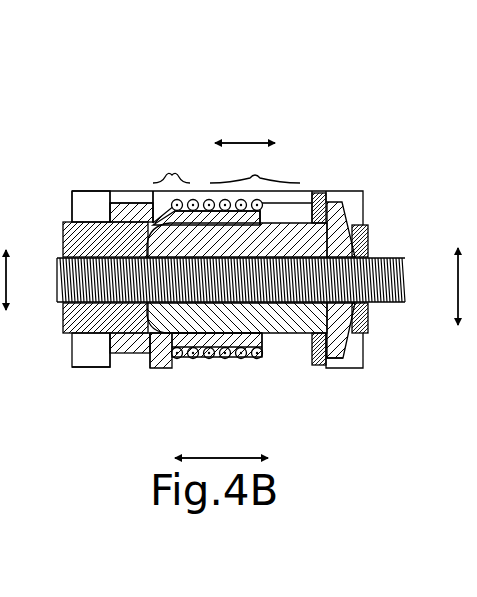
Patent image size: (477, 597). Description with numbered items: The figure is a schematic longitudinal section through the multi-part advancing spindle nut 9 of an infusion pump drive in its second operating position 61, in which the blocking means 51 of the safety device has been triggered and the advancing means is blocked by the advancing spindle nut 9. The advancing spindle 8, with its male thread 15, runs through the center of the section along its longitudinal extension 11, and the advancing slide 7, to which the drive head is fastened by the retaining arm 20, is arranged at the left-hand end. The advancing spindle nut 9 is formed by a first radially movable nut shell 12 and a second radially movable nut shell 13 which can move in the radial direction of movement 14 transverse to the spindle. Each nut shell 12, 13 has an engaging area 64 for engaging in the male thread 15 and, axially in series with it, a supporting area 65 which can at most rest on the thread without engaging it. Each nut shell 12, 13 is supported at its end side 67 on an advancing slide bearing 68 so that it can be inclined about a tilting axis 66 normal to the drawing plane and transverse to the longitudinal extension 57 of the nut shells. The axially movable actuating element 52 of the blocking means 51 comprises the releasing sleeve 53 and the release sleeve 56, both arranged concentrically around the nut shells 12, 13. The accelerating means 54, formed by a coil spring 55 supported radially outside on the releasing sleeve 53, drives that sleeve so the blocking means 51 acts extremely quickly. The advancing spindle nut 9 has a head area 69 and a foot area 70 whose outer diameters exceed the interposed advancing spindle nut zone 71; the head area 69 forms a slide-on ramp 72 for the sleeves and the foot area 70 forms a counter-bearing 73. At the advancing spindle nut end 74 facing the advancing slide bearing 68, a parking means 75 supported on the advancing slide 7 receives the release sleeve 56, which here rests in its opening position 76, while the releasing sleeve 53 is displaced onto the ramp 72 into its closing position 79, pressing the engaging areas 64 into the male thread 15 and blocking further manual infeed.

The advancing slide 7 is at (83, 188).
The advancing spindle 8 is at (399, 262).
The multi-part advancing spindle nut 9 is at (305, 395).
The longitudinal extension 11 is at (220, 458).
The first radially movable nut shell 12 is at (217, 361).
The second radially movable nut shell 13 is at (300, 225).
The radial direction of movement 14 is at (8, 292).
The male thread 15 is at (476, 310).
The retaining arm 20 is at (289, 0).
The blocking means 51 is at (163, 145).
The actuating element 52 is at (332, 167).
The releasing sleeve 53 is at (203, 358).
The accelerating means 54 is at (183, 390).
The coil spring 55 is at (233, 358).
The release sleeve 56 is at (130, 345).
The longitudinal extension of the nut shells 57 is at (243, 143).
The second operating position 61 is at (388, 72).
The engaging area 64 is at (173, 167).
The supporting area 65 is at (236, 255).
The tilting axis 66 is at (360, 250).
The end side 67 is at (396, 168).
The advancing slide bearing 68 is at (355, 233).
The head area 69 is at (167, 98).
The foot area 70 is at (343, 98).
The advancing spindle nut zone 71 is at (261, 92).
The slide-on ramp 72 is at (153, 345).
The counter-bearing 73 is at (343, 362).
The advancing spindle nut end 74 is at (97, 388).
The parking means 75 is at (85, 335).
The opening position 76 is at (130, 188).
The closing position 79 is at (203, 150).